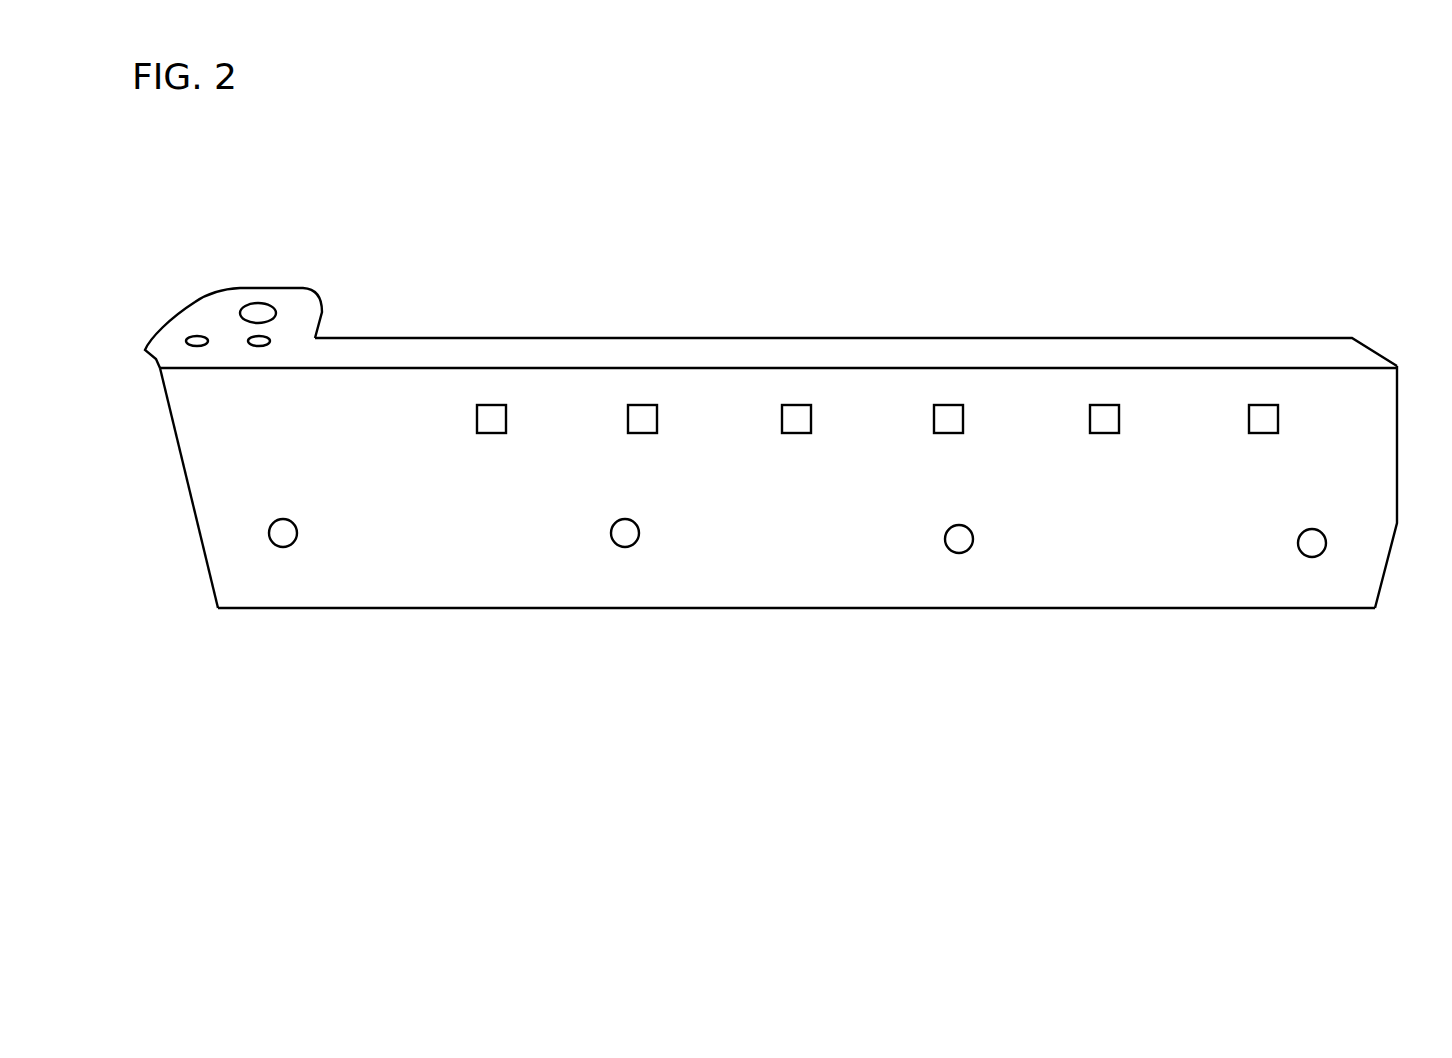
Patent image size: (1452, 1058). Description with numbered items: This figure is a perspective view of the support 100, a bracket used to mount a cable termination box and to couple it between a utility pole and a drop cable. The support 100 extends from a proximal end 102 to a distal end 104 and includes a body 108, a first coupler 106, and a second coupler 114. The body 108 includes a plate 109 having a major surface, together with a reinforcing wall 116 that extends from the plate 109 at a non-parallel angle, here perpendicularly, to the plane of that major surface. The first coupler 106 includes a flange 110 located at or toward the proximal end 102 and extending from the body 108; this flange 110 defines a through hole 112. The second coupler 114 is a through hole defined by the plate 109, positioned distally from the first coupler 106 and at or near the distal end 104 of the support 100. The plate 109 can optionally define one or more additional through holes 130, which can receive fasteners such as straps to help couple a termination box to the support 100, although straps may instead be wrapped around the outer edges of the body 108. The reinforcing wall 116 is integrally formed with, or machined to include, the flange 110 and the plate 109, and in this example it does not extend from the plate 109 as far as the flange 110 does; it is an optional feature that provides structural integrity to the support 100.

The support 100 is at (912, 176).
The proximal end 102 is at (188, 493).
The distal end 104 is at (1393, 538).
The first coupler 106 is at (320, 243).
The body 108 is at (795, 608).
The plate 109 is at (445, 533).
The flange 110 is at (212, 313).
The through hole 112 is at (252, 310).
The second coupler 114 is at (1310, 543).
The reinforcing wall 116 is at (1208, 353).
The additional through holes 130 is at (493, 420).